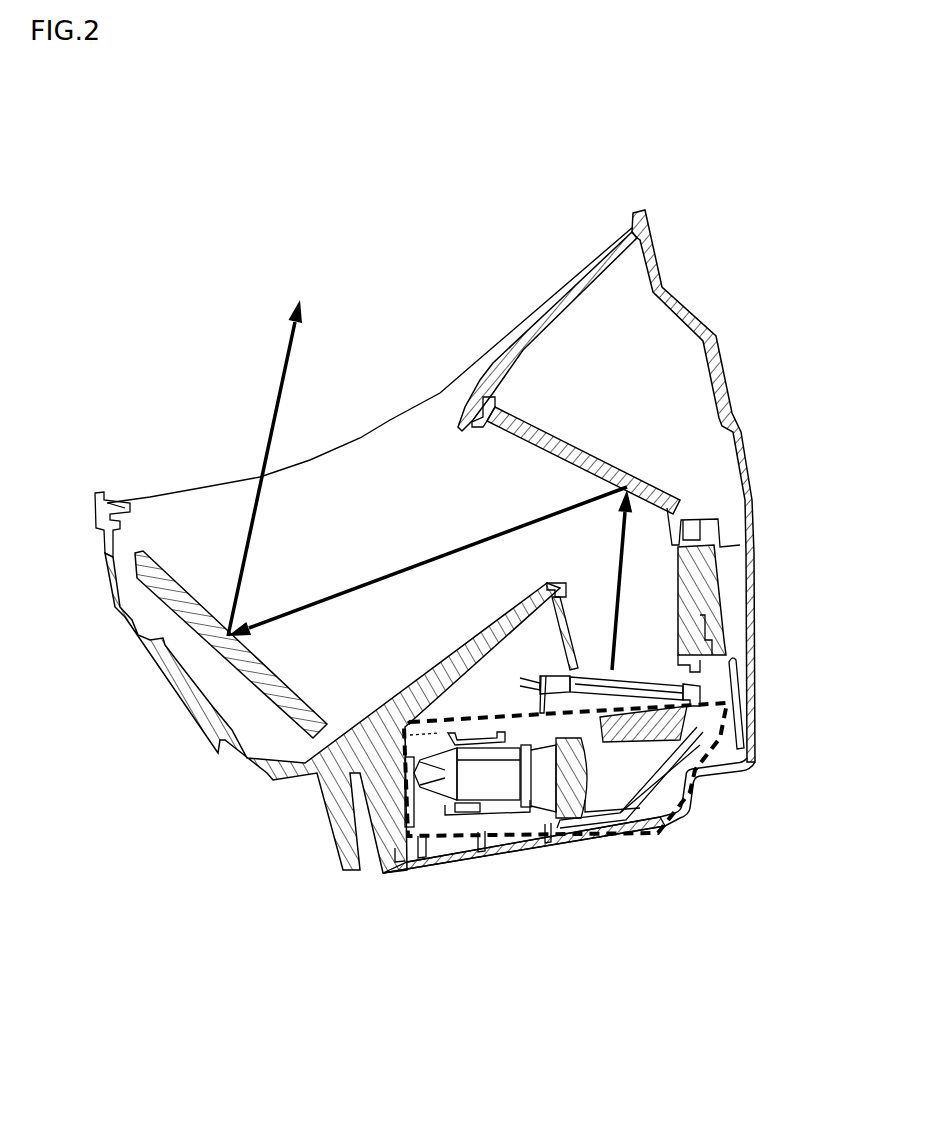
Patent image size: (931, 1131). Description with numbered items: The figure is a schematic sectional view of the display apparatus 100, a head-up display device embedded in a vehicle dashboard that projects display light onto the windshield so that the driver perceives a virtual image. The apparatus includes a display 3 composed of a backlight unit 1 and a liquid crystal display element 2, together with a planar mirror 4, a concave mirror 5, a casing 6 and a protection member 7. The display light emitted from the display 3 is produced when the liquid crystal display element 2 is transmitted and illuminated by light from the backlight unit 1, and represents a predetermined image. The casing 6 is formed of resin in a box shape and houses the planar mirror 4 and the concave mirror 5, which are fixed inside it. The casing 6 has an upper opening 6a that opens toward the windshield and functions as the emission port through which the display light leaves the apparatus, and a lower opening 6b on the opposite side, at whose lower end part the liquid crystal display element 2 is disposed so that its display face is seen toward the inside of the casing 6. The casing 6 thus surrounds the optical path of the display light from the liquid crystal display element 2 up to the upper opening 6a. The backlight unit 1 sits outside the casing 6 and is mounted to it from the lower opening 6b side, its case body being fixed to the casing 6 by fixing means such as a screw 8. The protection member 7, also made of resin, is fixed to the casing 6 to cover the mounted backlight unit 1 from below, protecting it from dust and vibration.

The display apparatus 100 is at (141, 317).
The backlight unit 1 is at (733, 737).
The liquid crystal display element 2 is at (700, 690).
The display 3 is at (810, 668).
The planar mirror 4 is at (612, 457).
The concave mirror 5 is at (275, 692).
The casing 6 is at (165, 663).
The upper opening 6a is at (117, 525).
The lower opening 6b is at (580, 636).
The protection member 7 is at (448, 860).
The screw 8 is at (705, 635).